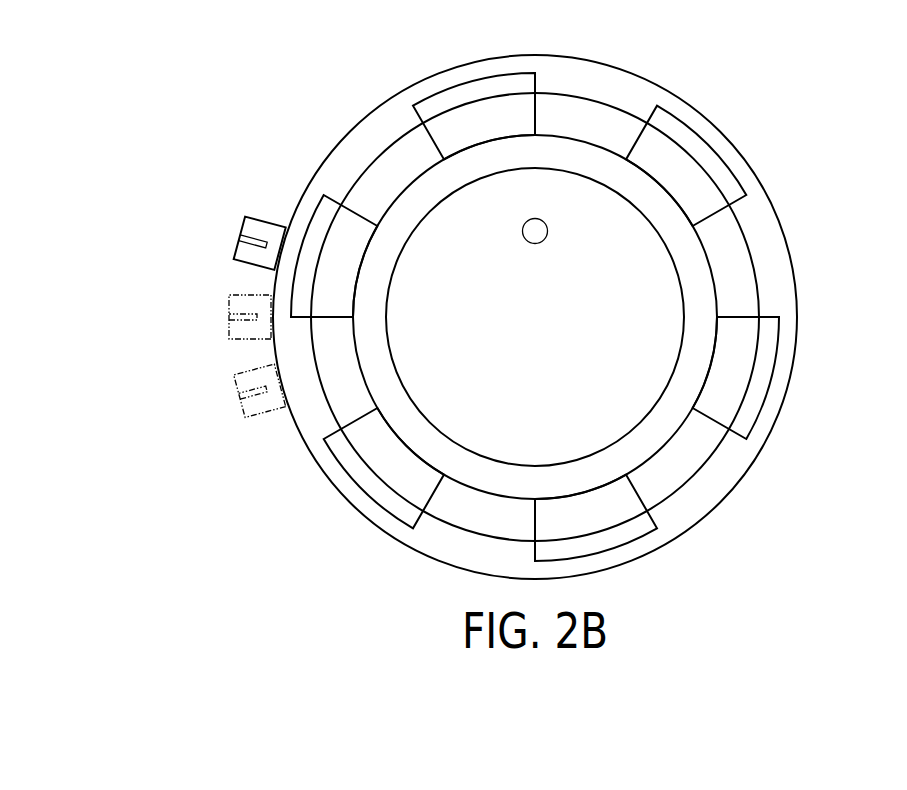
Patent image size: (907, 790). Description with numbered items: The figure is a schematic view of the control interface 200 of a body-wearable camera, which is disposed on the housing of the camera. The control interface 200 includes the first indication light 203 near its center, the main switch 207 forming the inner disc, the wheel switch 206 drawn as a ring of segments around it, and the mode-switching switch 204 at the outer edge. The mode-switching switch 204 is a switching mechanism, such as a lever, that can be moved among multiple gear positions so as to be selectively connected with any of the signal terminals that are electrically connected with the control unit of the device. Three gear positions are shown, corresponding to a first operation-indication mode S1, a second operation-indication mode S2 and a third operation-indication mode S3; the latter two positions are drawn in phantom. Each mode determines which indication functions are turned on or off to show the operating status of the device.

The control interface 200 is at (732, 96).
The first indication light 203 is at (547, 233).
The mode-switching switch 204 is at (260, 227).
The wheel switch 206 is at (748, 368).
The main switch 207 is at (615, 393).
The first operation-indication mode S1 is at (210, 198).
The second operation-indication mode S2 is at (228, 318).
The third operation-indication mode S3 is at (234, 398).